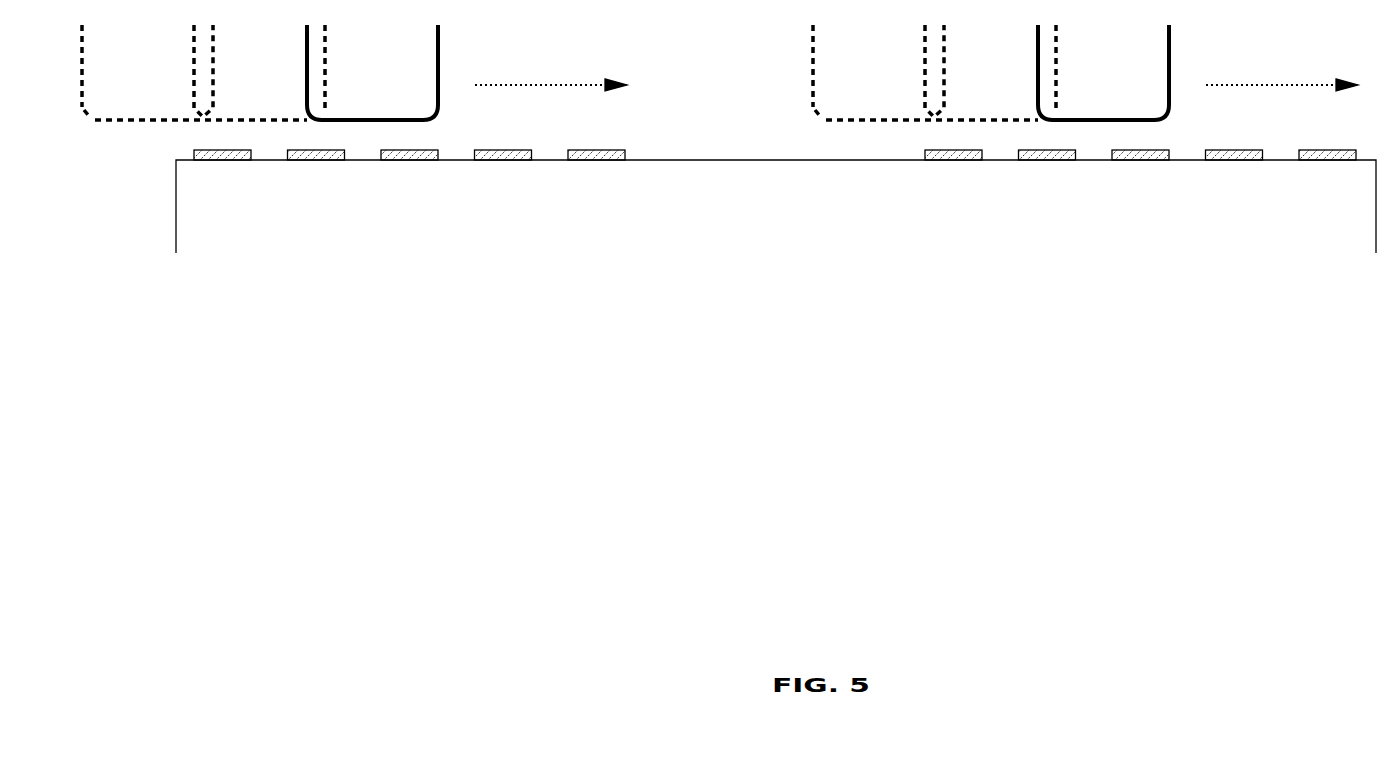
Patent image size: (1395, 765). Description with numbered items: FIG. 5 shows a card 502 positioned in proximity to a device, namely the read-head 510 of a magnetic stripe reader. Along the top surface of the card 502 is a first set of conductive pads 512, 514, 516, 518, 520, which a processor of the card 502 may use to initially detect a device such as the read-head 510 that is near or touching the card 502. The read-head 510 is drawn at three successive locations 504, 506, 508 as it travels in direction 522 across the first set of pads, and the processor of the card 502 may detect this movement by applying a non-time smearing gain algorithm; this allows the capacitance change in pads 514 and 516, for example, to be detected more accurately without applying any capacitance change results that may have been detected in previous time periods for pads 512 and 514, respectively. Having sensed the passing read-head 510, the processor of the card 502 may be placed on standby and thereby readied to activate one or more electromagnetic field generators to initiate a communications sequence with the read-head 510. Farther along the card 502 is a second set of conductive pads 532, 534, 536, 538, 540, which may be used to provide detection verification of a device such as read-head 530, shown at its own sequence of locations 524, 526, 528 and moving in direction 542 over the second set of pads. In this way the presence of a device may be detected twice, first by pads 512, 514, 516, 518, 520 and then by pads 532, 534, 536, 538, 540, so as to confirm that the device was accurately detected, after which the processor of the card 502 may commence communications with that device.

The card 502 is at (803, 235).
The location 504 is at (98, 96).
The location 506 is at (247, 47).
The location 508 is at (385, 48).
The read-head 510 is at (307, 50).
The conductive pad 512 is at (200, 150).
The conductive pad 514 is at (294, 150).
The conductive pad 516 is at (387, 150).
The conductive pad 518 is at (480, 150).
The conductive pad 520 is at (574, 150).
The direction 522 is at (495, 83).
The second transfer head outline 524 is at (909, 85).
The second die outline 526 is at (945, 58).
The second transfer head 528 is at (1103, 60).
The read-head 530 is at (1023, 67).
The conductive pad 532 is at (965, 142).
The conductive pad 534 is at (1059, 142).
The conductive pad 536 is at (1154, 142).
The conductive pad 538 is at (1246, 142).
The conductive pad 540 is at (1339, 142).
The second transfer direction 542 is at (1282, 75).